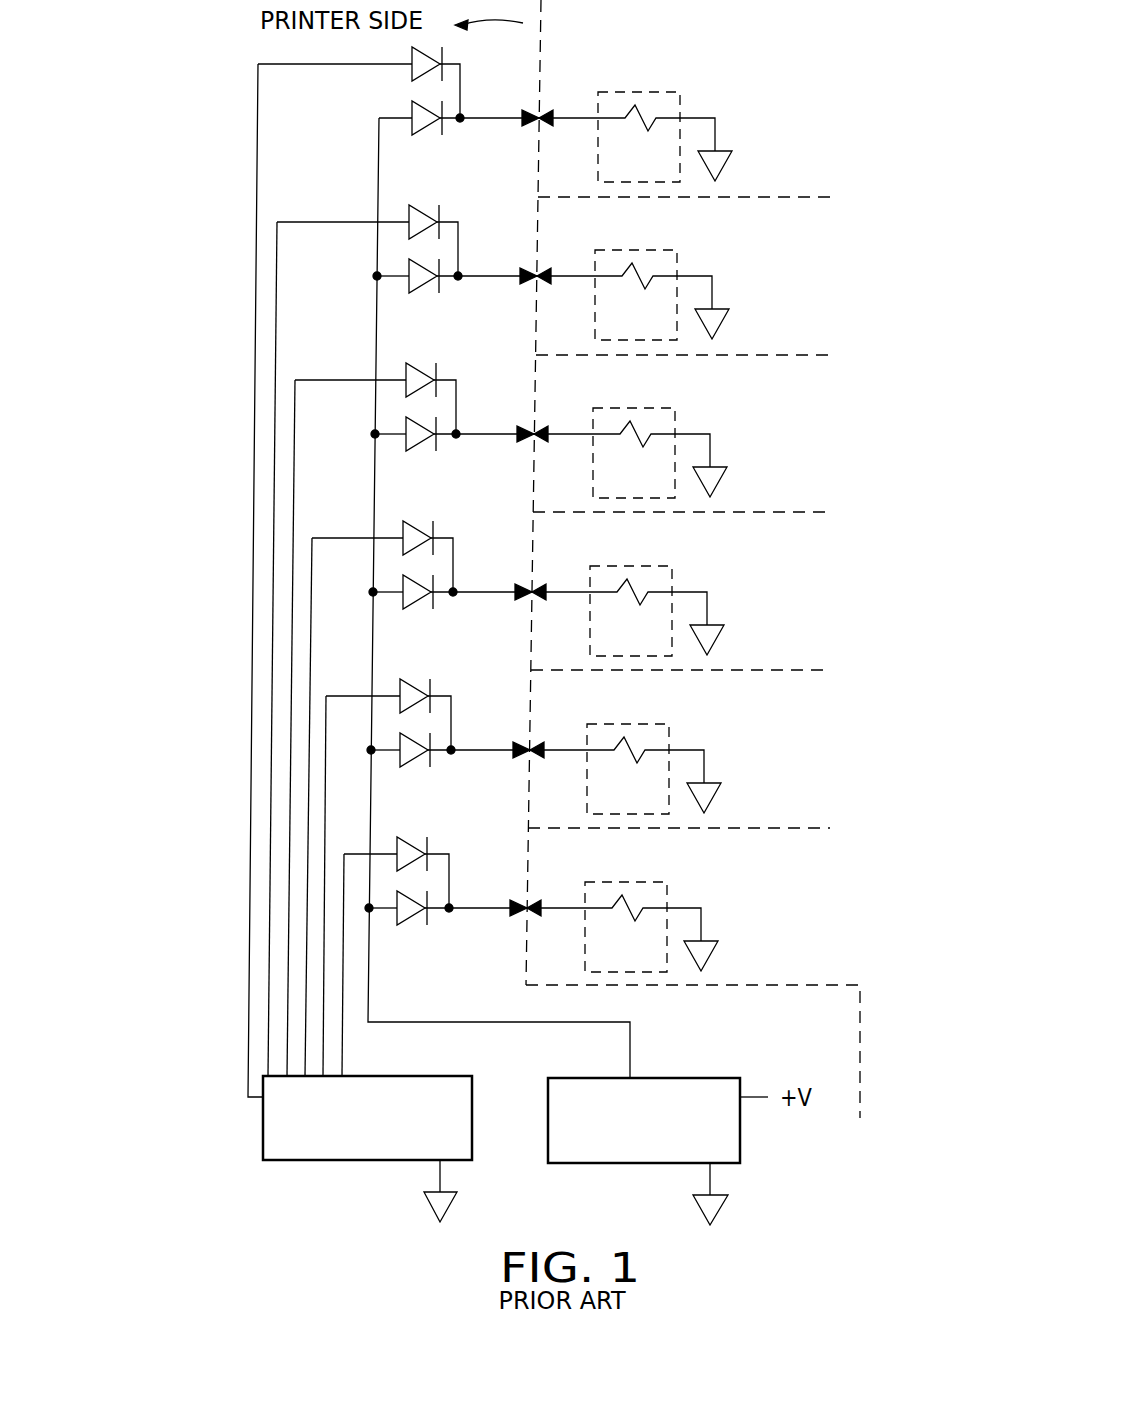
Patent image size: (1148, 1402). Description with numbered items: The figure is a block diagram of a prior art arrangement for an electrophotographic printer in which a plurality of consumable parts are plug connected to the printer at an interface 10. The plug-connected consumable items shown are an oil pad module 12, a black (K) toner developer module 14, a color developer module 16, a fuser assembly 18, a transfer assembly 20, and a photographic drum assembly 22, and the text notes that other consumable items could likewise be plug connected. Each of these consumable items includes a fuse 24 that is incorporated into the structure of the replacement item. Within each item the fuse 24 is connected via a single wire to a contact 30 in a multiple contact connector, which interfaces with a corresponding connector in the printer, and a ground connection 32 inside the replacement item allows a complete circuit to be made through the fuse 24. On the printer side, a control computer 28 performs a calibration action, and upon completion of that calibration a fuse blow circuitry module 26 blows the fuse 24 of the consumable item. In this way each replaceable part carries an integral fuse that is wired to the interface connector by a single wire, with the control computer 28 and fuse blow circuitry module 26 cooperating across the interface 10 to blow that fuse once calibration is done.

The interface 10 is at (541, 32).
The oil pad module 12 is at (644, 118).
The black (K) toner developer module 14 is at (675, 268).
The color developer module 16 is at (673, 426).
The fuser assembly 18 is at (670, 584).
The transfer assembly 20 is at (667, 742).
The photographic drum assembly 22 is at (665, 900).
The fuse 24 is at (645, 125).
The fuse blow circuitry module 26 is at (630, 1165).
The control computer 28 is at (322, 1162).
The contact 30 is at (543, 113).
The ground connection 32 is at (715, 130).